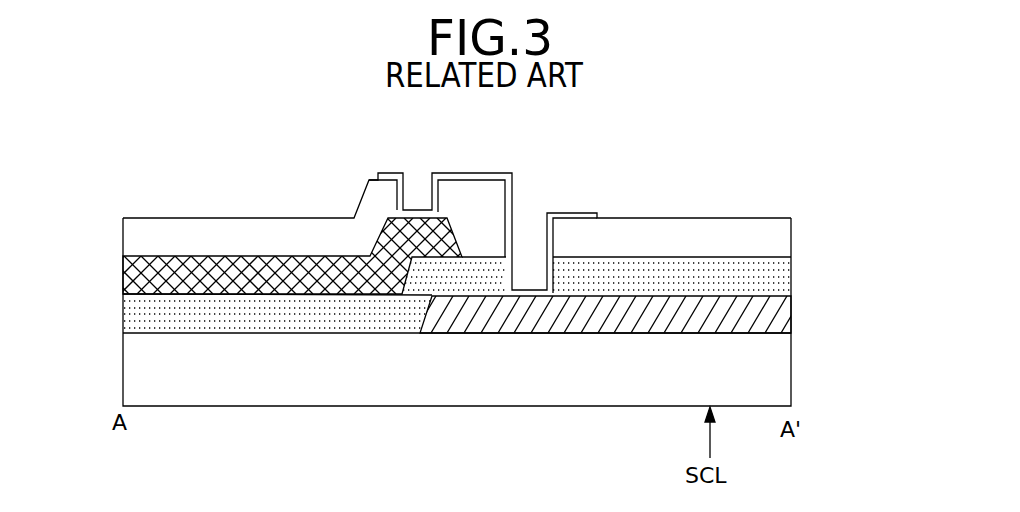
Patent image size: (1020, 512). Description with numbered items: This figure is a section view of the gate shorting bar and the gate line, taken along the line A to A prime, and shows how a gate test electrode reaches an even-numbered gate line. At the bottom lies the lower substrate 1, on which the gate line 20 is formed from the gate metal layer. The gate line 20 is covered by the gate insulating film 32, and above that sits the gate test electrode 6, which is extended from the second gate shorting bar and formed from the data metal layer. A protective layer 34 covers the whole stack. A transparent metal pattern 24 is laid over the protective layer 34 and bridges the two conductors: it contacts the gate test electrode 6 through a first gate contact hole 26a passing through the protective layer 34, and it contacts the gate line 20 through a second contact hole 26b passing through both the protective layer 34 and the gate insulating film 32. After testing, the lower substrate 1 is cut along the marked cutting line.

The lower substrate 1 is at (791, 378).
The gate test electrode 6 is at (122, 283).
The gate line 20 is at (791, 311).
The transparent metal pattern 24 is at (580, 212).
The first gate contact hole 26a is at (417, 182).
The second contact hole 26b is at (533, 202).
The gate insulating film 32 is at (791, 278).
The protective layer 34 is at (791, 240).